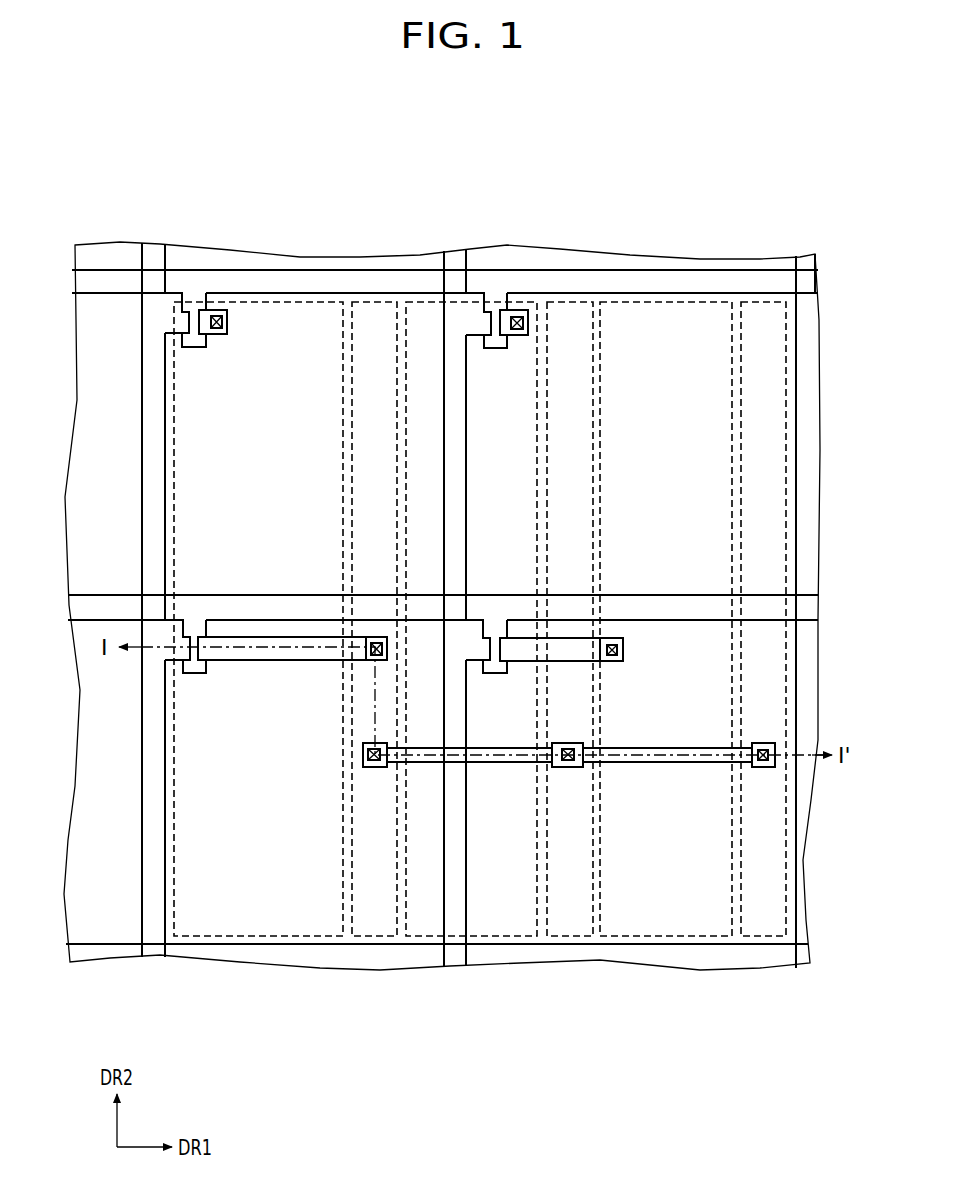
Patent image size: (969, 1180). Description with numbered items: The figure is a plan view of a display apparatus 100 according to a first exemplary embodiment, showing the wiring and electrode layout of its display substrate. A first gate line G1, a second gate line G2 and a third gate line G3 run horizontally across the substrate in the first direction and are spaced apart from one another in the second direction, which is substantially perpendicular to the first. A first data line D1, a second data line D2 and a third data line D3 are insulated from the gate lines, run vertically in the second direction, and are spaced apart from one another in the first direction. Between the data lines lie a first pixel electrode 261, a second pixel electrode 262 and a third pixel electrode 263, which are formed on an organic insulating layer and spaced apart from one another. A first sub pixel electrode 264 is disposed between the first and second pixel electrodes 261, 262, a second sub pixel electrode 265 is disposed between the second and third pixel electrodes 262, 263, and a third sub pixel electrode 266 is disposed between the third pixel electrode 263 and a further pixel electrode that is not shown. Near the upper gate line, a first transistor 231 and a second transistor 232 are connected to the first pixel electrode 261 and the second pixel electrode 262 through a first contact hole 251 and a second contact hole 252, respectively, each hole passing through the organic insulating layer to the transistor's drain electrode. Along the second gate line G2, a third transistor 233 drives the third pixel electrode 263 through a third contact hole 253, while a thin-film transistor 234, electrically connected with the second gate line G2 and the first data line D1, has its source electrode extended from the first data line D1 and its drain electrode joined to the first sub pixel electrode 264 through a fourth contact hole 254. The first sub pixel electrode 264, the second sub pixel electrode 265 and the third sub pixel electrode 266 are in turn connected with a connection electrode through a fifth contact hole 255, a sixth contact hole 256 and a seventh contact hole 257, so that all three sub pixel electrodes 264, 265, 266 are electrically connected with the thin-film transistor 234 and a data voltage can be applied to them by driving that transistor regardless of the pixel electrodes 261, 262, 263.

The display apparatus 100 is at (220, 150).
The first gate line G1 is at (117, 294).
The second gate line G2 is at (112, 601).
The third gate line G3 is at (110, 944).
The first data line D1 is at (155, 250).
The second data line D2 is at (457, 257).
The third data line D3 is at (808, 262).
The first pixel electrode 261 is at (283, 302).
The second pixel electrode 262 is at (418, 302).
The third pixel electrode 263 is at (658, 302).
The first sub pixel electrode 264 is at (365, 302).
The second sub pixel electrode 265 is at (567, 302).
The third sub pixel electrode 266 is at (753, 302).
The first transistor 231 is at (226, 351).
The second transistor 232 is at (507, 358).
The third transistor 233 is at (507, 682).
The thin-film transistor 234 is at (224, 679).
The first contact hole 251 is at (228, 320).
The second contact hole 252 is at (530, 321).
The third contact hole 253 is at (623, 649).
The fourth contact hole 254 is at (387, 648).
The fifth contact hole 255 is at (374, 767).
The sixth contact hole 256 is at (567, 767).
The seventh contact hole 257 is at (763, 767).